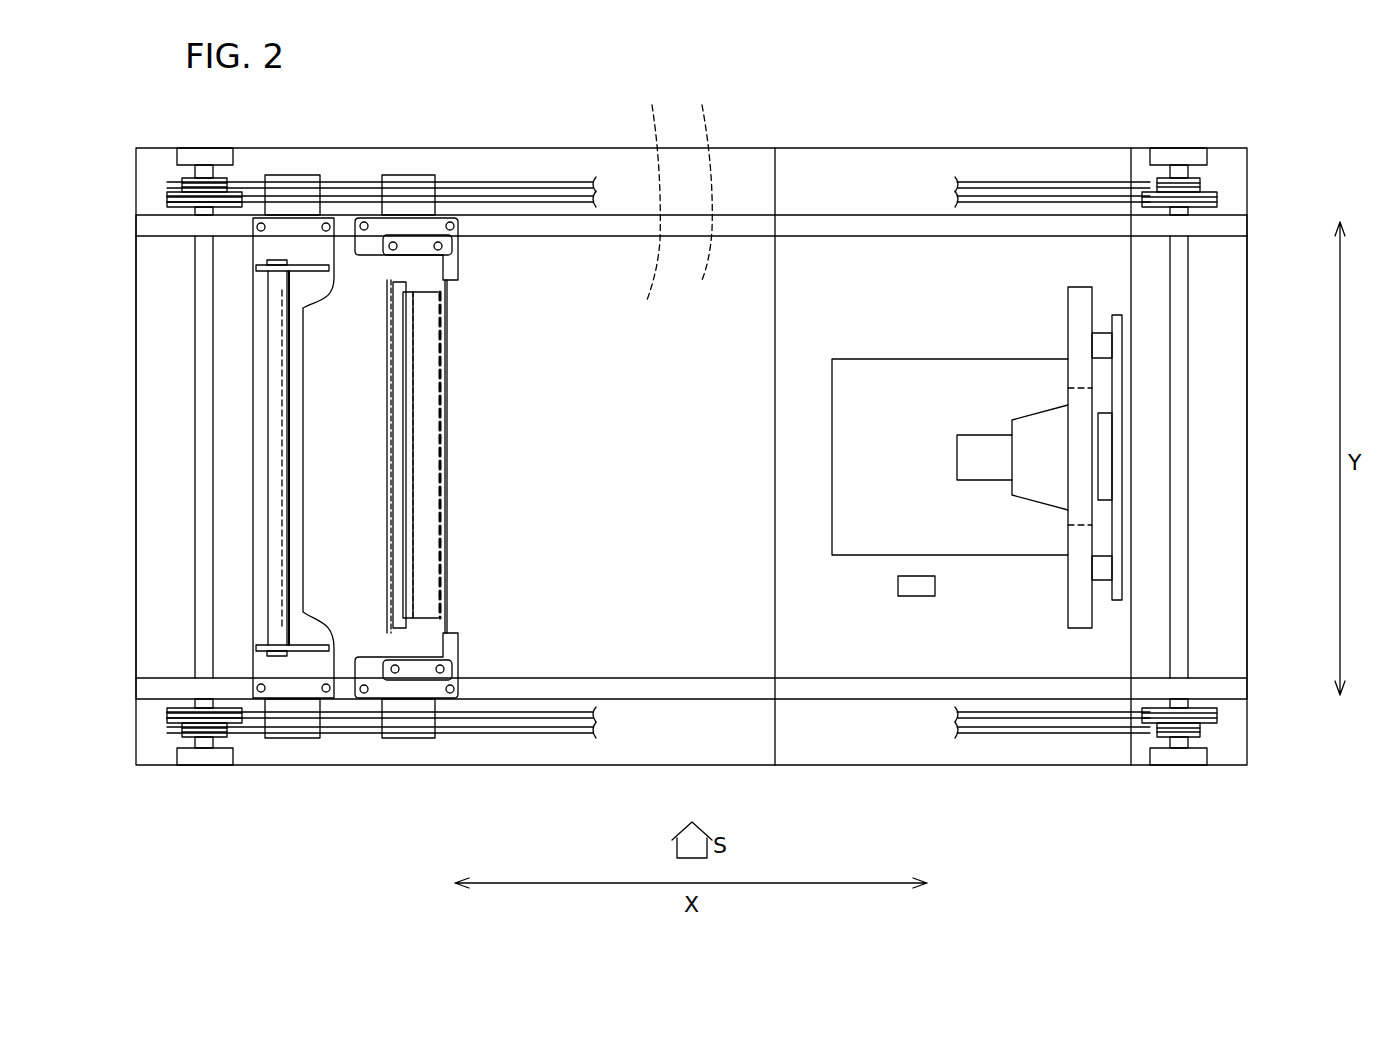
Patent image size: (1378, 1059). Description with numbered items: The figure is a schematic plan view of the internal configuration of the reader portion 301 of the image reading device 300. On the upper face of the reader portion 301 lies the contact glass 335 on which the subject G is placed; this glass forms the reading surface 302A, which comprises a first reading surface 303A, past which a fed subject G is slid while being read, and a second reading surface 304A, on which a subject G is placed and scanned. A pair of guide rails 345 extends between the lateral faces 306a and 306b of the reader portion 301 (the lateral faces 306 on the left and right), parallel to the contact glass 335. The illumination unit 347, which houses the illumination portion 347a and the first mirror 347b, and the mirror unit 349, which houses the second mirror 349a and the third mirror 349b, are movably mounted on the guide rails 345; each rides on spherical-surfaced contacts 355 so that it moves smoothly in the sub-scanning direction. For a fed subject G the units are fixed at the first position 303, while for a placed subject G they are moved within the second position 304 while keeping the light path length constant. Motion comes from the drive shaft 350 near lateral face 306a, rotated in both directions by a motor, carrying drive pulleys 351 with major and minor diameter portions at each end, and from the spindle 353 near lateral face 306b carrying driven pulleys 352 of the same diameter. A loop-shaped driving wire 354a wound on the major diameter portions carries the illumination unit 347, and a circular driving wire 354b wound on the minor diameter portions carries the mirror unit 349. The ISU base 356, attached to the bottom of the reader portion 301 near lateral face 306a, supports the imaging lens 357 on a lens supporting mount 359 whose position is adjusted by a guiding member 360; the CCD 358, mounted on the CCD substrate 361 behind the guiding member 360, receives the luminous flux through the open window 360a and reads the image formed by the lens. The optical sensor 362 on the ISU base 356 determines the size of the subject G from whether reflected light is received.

The image reading device 300 is at (1224, 118).
The reader portion 301 is at (1247, 163).
The reading surface 302A is at (735, 622).
The first position 303 is at (282, 748).
The first reading surface 303A is at (348, 703).
The second position 304 is at (643, 735).
The second reading surface 304A is at (713, 620).
The lateral face 306 is at (1112, 148).
The lateral face 306a is at (1248, 492).
The lateral face 306b is at (136, 420).
The contact glass 335 is at (659, 190).
The guide rails 345 is at (570, 225).
The illumination unit 347 is at (445, 490).
The illumination portion 347a is at (432, 442).
The first mirror 347b is at (395, 375).
The mirror unit 349 is at (303, 542).
The second mirror 349a is at (280, 492).
The third mirror 349b is at (282, 462).
The drive shaft 350 is at (1190, 346).
The drive pulleys 351 is at (1208, 184).
The driven pulleys 352 is at (178, 183).
The spindle 353 is at (195, 322).
The driving wire 354a is at (483, 183).
The driving wire 354b is at (553, 196).
The contacts 355 is at (450, 215).
The ISU base 356 is at (790, 372).
The imaging lens 357 is at (971, 447).
The CCD 358 is at (1105, 440).
The lens supporting mount 359 is at (883, 359).
The guiding member 360 is at (1068, 588).
The open window 360a is at (1075, 398).
The CCD substrate 361 is at (1118, 388).
The optical sensor 362 is at (918, 597).
The subject G is at (703, 180).